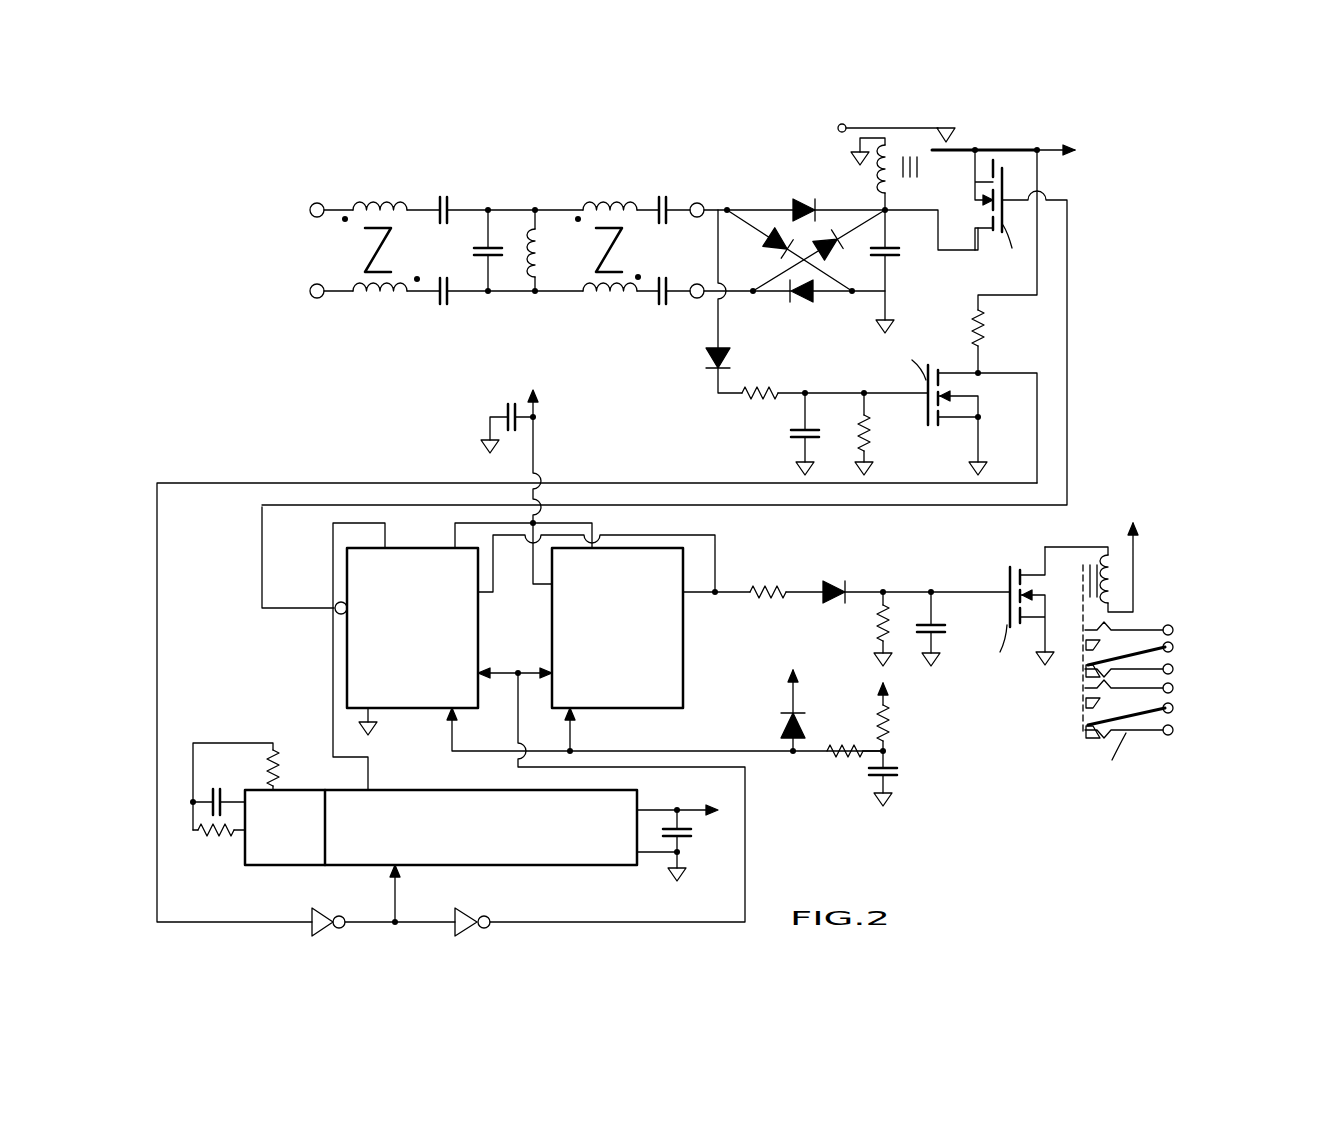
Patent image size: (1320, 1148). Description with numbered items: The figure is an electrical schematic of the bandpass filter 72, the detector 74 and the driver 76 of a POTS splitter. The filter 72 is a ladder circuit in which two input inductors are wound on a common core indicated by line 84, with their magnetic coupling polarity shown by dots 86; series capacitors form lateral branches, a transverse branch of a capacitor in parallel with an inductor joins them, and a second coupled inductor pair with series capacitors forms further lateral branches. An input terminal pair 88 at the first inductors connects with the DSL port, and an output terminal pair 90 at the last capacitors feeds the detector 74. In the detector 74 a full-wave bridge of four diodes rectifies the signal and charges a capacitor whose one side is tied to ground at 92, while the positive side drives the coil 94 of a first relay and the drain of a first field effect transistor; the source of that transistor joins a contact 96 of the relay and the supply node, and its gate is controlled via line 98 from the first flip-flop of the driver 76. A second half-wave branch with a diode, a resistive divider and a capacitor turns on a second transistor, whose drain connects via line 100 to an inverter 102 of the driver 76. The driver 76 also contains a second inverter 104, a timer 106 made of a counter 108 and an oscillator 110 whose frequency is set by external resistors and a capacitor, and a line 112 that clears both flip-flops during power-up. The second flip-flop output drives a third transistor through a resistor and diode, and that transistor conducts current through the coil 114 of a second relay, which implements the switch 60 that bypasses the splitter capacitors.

The switch 60 is at (1200, 505).
The bandpass filter 72 is at (707, 162).
The detector 74 is at (1105, 122).
The driver 76 is at (217, 465).
The common core 84 is at (383, 247).
The dots 86 is at (345, 222).
The input terminal pair 88 is at (312, 286).
The output terminal pair 90 is at (690, 285).
The ground 92 is at (885, 330).
The coil 94 is at (878, 178).
The contact 96 is at (956, 146).
The line 98 is at (1069, 308).
The line 100 is at (662, 482).
The inverter 102 is at (320, 912).
The second inverter 104 is at (462, 912).
The timer 106 is at (545, 862).
The counter 108 is at (443, 850).
The oscillator 110 is at (276, 848).
The line 112 is at (592, 751).
The coil 114 is at (1118, 561).